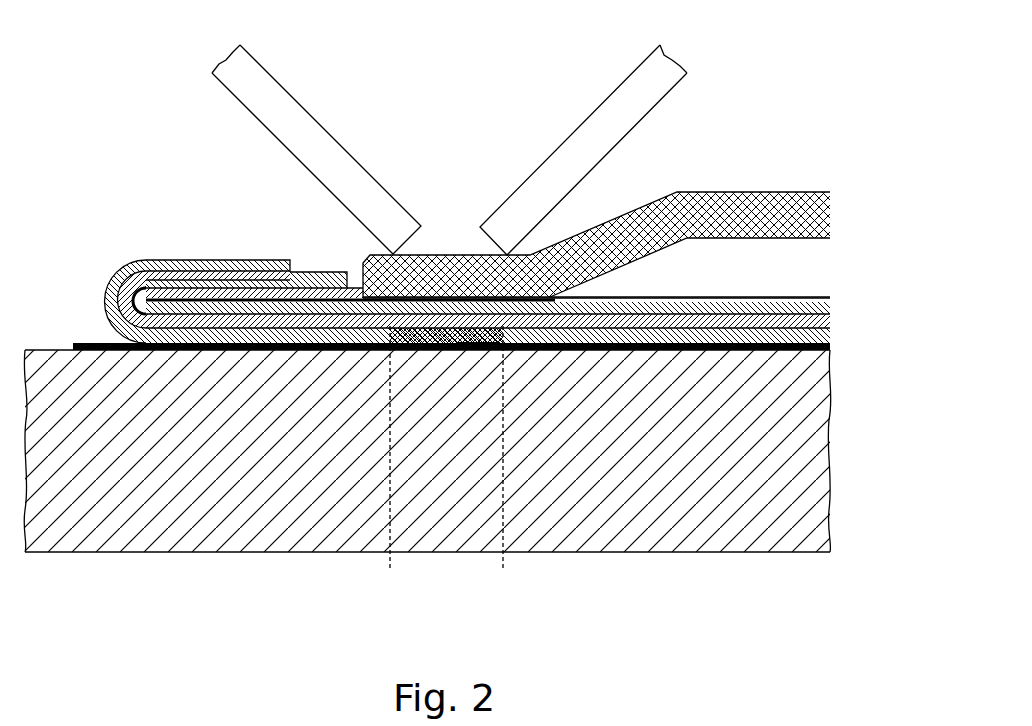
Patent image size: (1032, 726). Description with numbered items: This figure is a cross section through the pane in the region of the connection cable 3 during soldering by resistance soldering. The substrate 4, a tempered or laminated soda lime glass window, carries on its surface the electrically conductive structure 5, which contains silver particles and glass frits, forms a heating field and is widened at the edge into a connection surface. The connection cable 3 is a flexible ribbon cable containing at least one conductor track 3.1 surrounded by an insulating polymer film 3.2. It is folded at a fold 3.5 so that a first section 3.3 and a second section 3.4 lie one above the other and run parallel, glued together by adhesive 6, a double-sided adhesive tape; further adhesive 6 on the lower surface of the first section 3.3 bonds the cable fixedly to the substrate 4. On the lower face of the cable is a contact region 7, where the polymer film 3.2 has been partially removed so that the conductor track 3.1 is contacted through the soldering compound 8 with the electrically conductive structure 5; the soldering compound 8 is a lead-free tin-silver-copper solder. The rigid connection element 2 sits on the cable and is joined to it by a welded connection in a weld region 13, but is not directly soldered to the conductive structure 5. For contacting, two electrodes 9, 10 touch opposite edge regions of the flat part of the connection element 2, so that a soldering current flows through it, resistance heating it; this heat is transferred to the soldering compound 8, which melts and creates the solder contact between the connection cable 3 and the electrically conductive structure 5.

The connection element 2 is at (732, 190).
The connection cable 3 is at (484, 213).
The conductor track 3.1 is at (832, 322).
The insulating polymer film 3.2 is at (832, 306).
The first section 3.3 is at (730, 290).
The second section 3.4 is at (210, 252).
The fold 3.5 is at (112, 265).
The substrate 4 is at (831, 438).
The electrically conductive structure 5 is at (84, 344).
The adhesive 6 is at (112, 334).
The contact region 7 is at (505, 570).
The soldering compound 8 is at (457, 343).
The electrode 9 is at (332, 133).
The electrode 10 is at (567, 138).
The weld region 13 is at (316, 286).